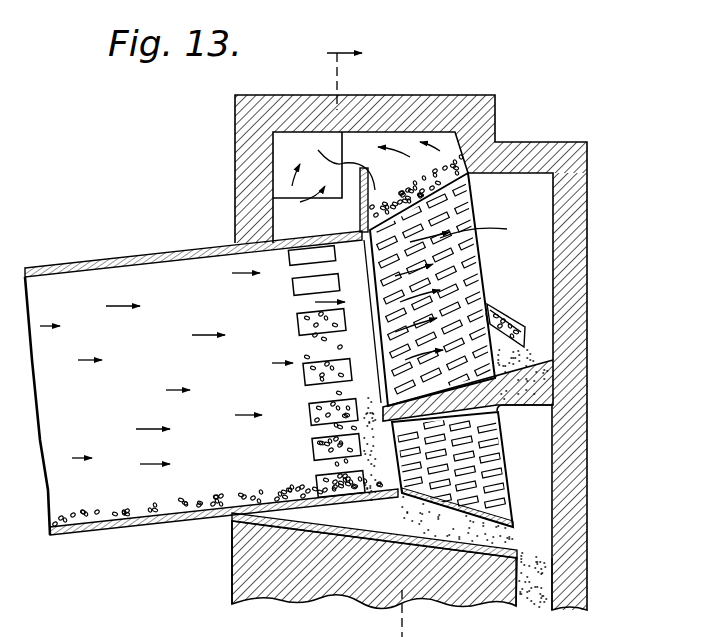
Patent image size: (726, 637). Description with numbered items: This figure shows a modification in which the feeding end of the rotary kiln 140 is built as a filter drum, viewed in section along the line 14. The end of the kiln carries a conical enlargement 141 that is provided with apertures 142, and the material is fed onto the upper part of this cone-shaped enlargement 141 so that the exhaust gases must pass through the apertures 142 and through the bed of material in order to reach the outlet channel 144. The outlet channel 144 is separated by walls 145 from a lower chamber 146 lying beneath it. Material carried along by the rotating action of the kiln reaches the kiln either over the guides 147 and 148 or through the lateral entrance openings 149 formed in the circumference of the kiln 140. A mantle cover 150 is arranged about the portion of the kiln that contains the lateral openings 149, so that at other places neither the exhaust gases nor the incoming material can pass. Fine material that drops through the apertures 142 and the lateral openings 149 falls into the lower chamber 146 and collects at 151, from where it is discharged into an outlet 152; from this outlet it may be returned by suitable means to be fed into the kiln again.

The section line 14 is at (365, 338).
The rotary kiln 140 is at (118, 260).
The conical enlargement 141 is at (474, 199).
The apertures 142 is at (462, 265).
The outlet channel 144 is at (302, 158).
The walls 145 is at (473, 165).
The lower chamber 146 is at (530, 433).
The guide 147 is at (487, 318).
The guide 148 is at (476, 398).
The lateral entrance openings 149 is at (312, 452).
The mantle cover 150 is at (298, 228).
The collecting point 151 is at (398, 535).
The outlet 152 is at (540, 585).